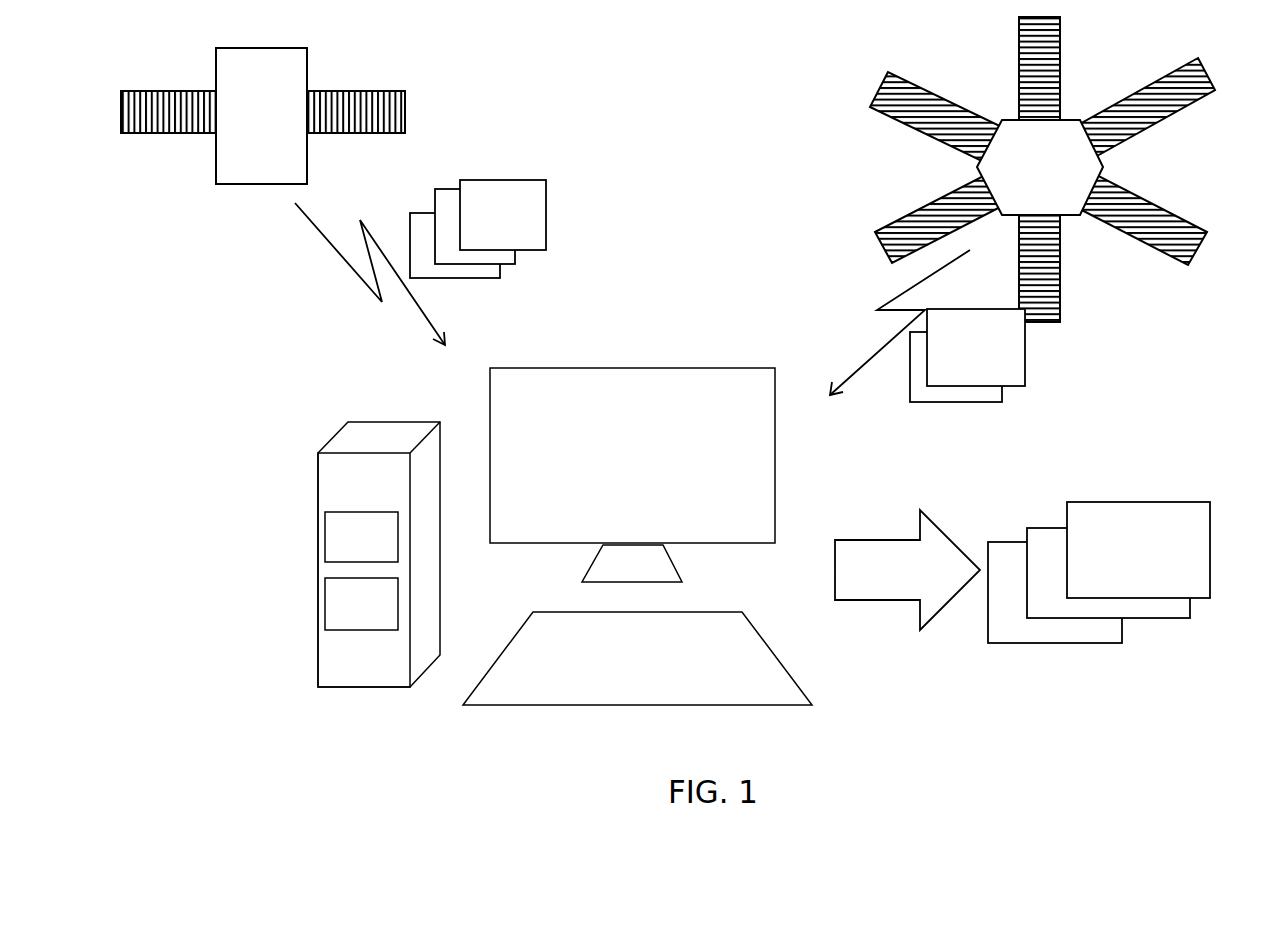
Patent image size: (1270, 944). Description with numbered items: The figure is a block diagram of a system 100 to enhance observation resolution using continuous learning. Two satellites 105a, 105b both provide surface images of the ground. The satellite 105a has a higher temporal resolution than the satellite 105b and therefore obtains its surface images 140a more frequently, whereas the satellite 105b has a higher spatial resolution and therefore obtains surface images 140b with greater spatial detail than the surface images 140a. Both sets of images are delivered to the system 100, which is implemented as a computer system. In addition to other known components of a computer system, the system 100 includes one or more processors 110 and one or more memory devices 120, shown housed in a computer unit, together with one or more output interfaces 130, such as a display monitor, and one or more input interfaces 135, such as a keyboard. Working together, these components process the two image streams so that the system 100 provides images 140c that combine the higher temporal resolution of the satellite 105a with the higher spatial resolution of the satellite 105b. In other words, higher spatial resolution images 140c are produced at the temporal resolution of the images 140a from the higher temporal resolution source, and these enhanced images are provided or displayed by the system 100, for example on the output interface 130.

The system 100 is at (222, 389).
The satellite 105a is at (230, 121).
The satellite 105b is at (1008, 179).
The processor 110 is at (379, 554).
The memory device 120 is at (361, 604).
The output interface 130 is at (614, 471).
The input interface 135 is at (614, 676).
The surface images 140a is at (531, 224).
The surface images 140b is at (1015, 359).
The images 140c is at (1105, 559).